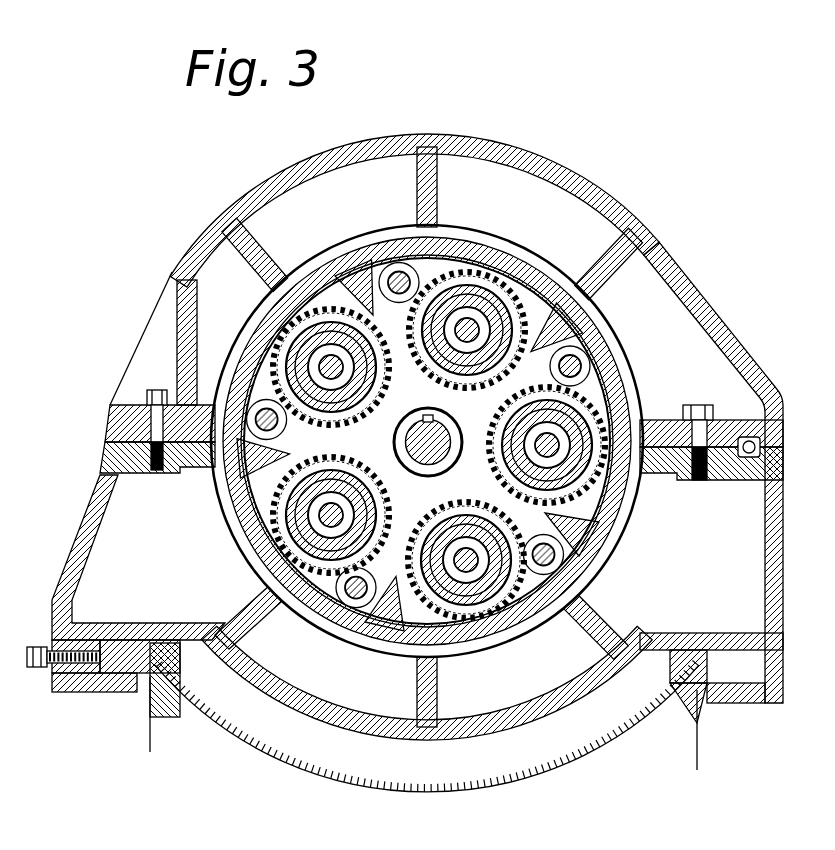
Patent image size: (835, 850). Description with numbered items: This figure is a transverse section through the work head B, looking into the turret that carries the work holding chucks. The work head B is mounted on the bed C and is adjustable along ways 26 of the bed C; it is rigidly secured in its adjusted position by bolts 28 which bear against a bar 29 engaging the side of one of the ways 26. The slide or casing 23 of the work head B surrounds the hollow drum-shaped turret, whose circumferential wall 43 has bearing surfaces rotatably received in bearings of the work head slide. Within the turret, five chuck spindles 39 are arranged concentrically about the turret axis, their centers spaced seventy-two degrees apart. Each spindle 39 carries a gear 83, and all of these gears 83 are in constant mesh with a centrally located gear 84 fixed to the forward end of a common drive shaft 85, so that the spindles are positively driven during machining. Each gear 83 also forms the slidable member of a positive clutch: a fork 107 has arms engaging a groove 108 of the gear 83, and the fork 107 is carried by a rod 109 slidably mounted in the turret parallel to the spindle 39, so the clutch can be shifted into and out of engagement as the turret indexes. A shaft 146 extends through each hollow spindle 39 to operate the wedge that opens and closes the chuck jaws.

The slide or casing of the work head 23 is at (613, 200).
The work head B is at (549, 149).
The circumferential wall 43 is at (275, 547).
The chuck spindle 39 is at (590, 397).
The gear 83 is at (347, 297).
The rod 109 is at (399, 271).
The fork 107 is at (483, 275).
The groove 108 is at (322, 330).
The shaft 146 is at (560, 427).
The centrally located gear 84 is at (418, 438).
The drive shaft 85 is at (440, 455).
The bolt 28 is at (35, 645).
The bar 29 is at (113, 670).
The way 26 is at (158, 703).
The bed C is at (702, 750).